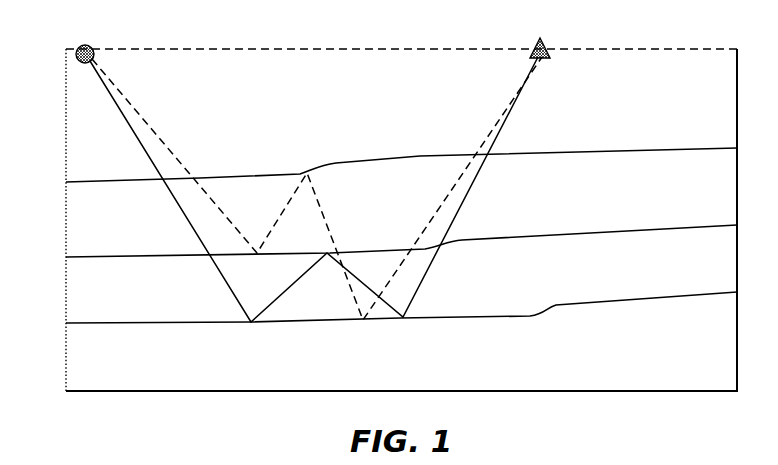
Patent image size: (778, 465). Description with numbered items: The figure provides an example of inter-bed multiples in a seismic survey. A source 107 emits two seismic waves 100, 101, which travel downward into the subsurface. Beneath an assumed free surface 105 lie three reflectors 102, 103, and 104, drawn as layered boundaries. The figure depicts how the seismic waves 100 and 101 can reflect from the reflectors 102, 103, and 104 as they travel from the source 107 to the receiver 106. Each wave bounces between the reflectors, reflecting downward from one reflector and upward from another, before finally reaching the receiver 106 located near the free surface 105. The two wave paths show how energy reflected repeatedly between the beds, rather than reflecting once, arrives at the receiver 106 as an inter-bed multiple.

The seismic wave 100 is at (145, 122).
The seismic wave 101 is at (138, 150).
The reflector 102 is at (585, 149).
The reflector 103 is at (585, 226).
The reflector 104 is at (585, 300).
The free surface 105 is at (240, 48).
The receiver 106 is at (543, 40).
The source 107 is at (77, 46).